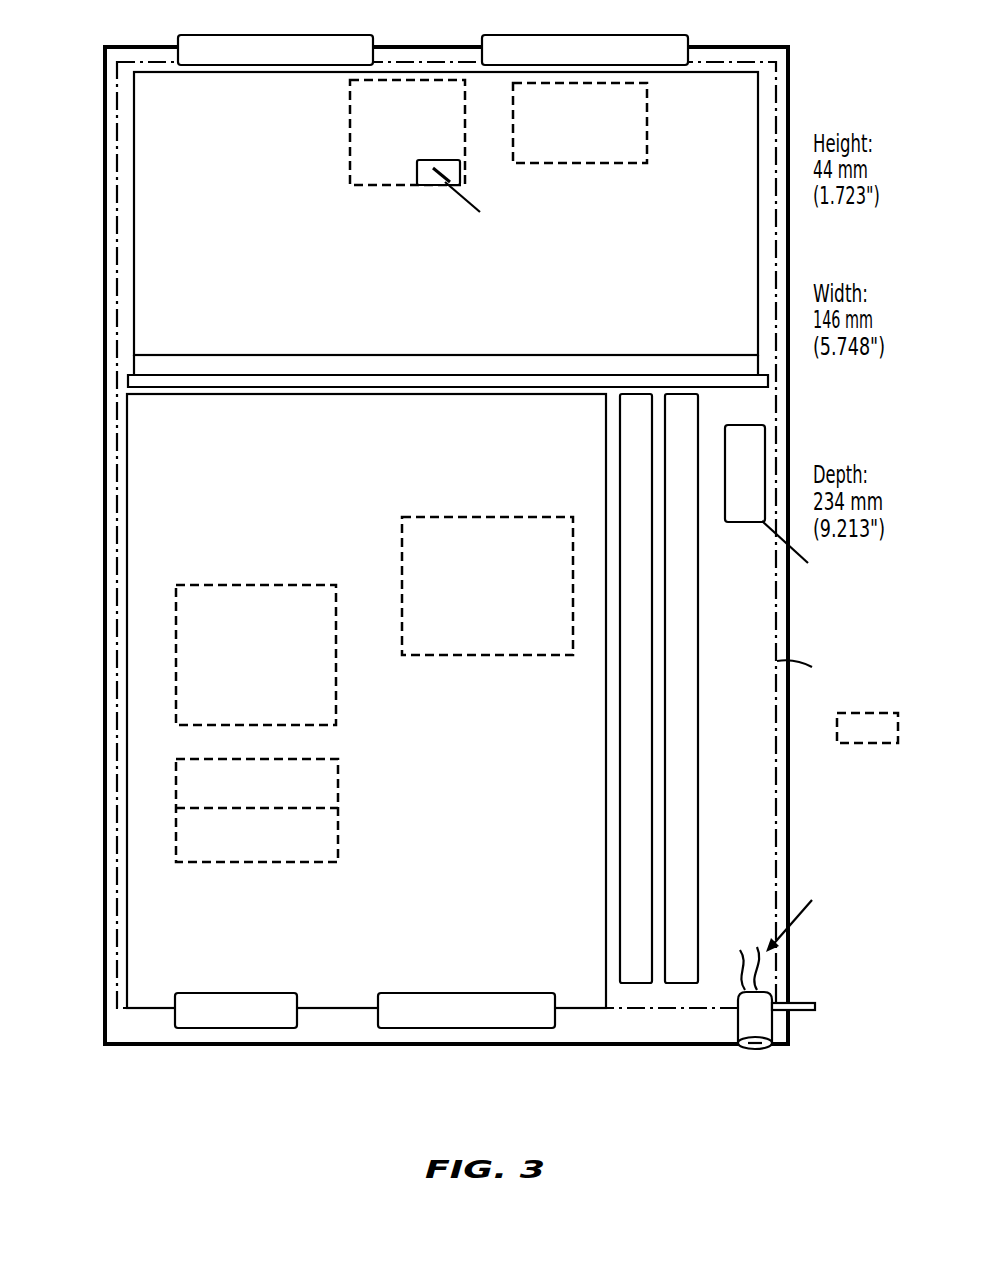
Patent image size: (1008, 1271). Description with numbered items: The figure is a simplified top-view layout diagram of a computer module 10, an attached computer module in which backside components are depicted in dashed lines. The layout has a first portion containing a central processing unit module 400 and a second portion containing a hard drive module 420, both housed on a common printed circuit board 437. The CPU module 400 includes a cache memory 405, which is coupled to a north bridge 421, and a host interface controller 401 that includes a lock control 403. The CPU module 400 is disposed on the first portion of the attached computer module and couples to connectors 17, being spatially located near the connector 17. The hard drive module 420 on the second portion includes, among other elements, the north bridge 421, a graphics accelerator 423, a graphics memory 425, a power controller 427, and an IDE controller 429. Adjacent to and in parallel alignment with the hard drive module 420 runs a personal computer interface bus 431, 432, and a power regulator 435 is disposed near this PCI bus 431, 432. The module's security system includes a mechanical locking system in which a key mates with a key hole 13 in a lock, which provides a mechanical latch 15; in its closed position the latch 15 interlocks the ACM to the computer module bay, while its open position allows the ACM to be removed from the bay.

The computer module 10 is at (813, 90).
The key hole 13 is at (753, 1050).
The mechanical latch 15 is at (800, 1003).
The connector 17 is at (340, 36).
The central processing unit module 400 is at (170, 243).
The host interface controller 401 is at (378, 172).
The lock control 403 is at (437, 176).
The cache memory 405 is at (612, 160).
The hard drive module 420 is at (168, 913).
The north bridge 421 is at (495, 640).
The graphics accelerator 423 is at (318, 690).
The graphics memory 425 is at (310, 838).
The power controller 427 is at (252, 1030).
The IDE controller 429 is at (430, 993).
The PCI bus 431 is at (637, 787).
The PCI bus 432 is at (680, 700).
The power regulator 435 is at (749, 466).
The common printed circuit board 437 is at (777, 630).